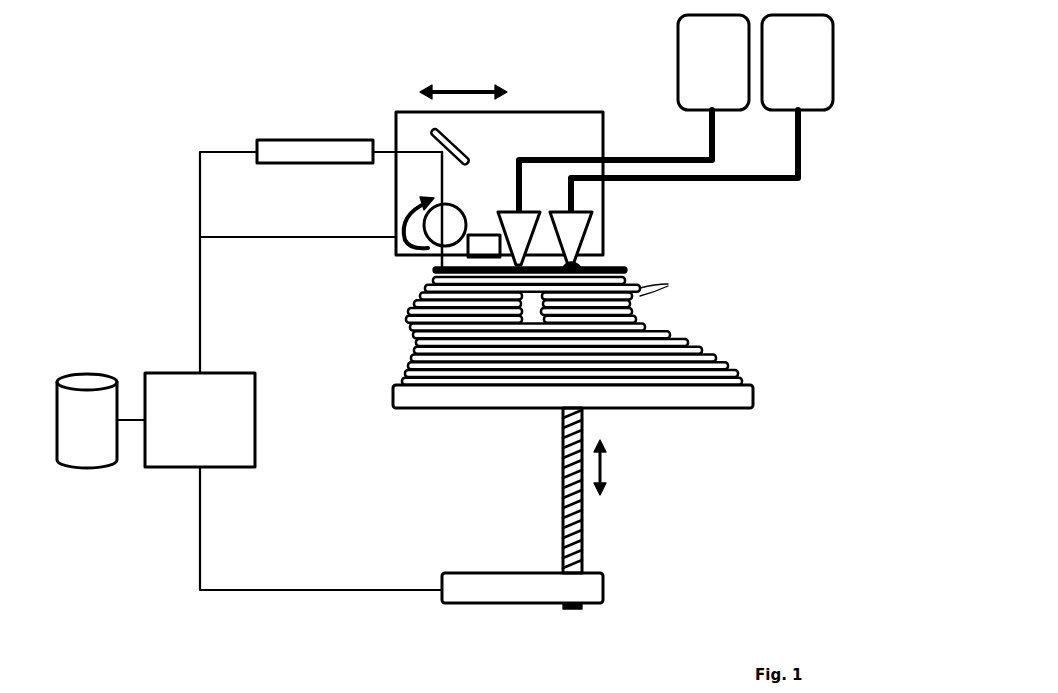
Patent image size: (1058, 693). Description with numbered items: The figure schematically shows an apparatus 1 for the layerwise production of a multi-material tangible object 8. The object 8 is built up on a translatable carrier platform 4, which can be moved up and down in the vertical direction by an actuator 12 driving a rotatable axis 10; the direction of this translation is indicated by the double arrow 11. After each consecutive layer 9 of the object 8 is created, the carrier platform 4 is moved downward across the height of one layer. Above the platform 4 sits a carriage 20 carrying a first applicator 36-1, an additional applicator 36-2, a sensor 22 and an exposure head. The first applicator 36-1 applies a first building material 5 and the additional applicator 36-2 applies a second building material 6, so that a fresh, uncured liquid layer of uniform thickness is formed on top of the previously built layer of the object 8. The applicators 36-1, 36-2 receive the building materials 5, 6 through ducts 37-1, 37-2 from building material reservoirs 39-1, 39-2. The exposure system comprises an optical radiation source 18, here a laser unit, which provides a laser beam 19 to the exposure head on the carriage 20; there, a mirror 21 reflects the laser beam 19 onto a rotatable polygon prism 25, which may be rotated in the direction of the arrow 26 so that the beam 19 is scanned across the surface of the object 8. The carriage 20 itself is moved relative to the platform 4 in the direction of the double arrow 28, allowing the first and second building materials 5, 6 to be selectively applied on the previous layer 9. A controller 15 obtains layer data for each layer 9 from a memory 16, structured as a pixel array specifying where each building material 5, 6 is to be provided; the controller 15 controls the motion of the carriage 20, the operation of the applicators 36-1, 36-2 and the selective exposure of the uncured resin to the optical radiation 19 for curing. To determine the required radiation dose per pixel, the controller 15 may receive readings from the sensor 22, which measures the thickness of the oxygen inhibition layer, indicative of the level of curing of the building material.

The apparatus 1 is at (134, 92).
The carrier platform 4 is at (755, 398).
The first building material 5 is at (432, 270).
The second building material 6 is at (585, 270).
The tangible object 8 is at (662, 334).
The layer 9 is at (661, 289).
The rotatable axis 10 is at (562, 498).
The double arrow 11 is at (608, 480).
The actuator 12 is at (606, 588).
The controller 15 is at (257, 418).
The memory 16 is at (57, 415).
The optical radiation source 18 is at (315, 140).
The laser beam 19 is at (382, 150).
The carriage 20 is at (583, 111).
The mirror 21 is at (452, 132).
The sensor 22 is at (487, 235).
The rotatable polygon prism 25 is at (466, 210).
The arrow 26 is at (410, 205).
The double arrow 28 is at (462, 82).
The first applicator 36-1 is at (540, 210).
The additional applicator 36-2 is at (595, 238).
The duct 37-1 is at (716, 134).
The duct 37-2 is at (814, 149).
The building material reservoir 39-1 is at (678, 58).
The building material reservoir 39-2 is at (835, 52).